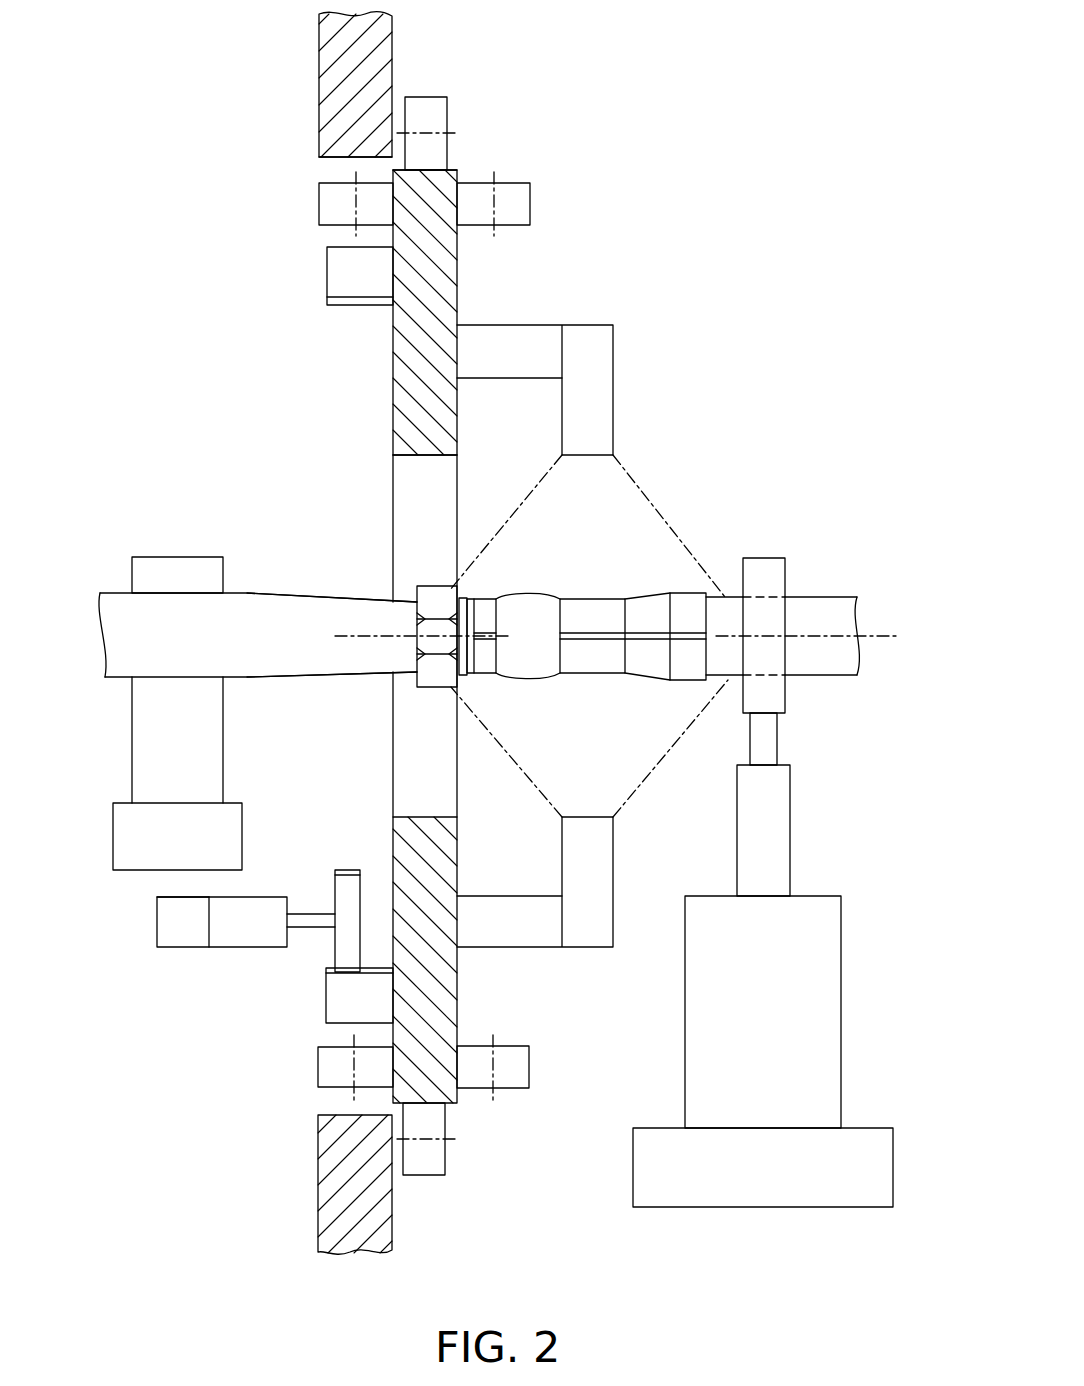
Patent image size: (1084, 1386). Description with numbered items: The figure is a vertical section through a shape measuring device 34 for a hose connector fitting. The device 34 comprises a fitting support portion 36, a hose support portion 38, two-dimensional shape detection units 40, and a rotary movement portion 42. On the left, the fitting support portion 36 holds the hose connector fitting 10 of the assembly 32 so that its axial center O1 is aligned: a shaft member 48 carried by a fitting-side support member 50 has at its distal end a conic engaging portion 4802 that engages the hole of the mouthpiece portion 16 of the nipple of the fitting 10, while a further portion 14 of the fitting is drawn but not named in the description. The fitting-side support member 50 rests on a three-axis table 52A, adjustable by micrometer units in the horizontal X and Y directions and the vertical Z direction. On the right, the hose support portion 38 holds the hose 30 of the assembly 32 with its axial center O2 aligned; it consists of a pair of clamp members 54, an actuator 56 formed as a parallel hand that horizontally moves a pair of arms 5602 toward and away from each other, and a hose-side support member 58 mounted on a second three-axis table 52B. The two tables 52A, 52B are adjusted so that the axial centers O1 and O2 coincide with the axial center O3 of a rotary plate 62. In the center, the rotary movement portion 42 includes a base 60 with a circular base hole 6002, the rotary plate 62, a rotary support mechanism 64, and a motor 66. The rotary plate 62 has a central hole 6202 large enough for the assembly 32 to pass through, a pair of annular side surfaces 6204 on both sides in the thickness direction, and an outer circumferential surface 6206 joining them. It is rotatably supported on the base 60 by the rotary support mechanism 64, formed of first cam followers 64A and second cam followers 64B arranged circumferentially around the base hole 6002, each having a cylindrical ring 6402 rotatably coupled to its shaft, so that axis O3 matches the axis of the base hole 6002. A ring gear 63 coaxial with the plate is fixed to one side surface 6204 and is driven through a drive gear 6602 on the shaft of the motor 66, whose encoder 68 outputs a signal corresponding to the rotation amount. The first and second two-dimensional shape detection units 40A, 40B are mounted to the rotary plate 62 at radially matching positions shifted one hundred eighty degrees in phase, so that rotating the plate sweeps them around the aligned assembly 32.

The hose connector fitting 10 is at (557, 578).
The workpiece body portion 14 is at (598, 597).
The mouthpiece portion 16 is at (465, 597).
The hose 30 is at (738, 597).
The assembly 32 is at (652, 482).
The shape measuring device 34 is at (728, 69).
The fitting support portion 36 is at (232, 517).
The hose support portion 38 is at (812, 523).
The two-dimensional shape detection units 40 is at (593, 642).
The first two-dimensional shape detection unit 40A is at (613, 353).
The second two-dimensional shape detection unit 40B is at (613, 903).
The rotary movement portion 42 is at (193, 1035).
The shaft member 48 is at (253, 593).
The engaging portion 4802 is at (350, 600).
The fitting-side support member 50 is at (160, 557).
The 3-axis table 52A is at (235, 803).
The 3-axis table 52B is at (711, 1207).
The clamp members 54 is at (762, 558).
The actuator 56 is at (793, 814).
The arms 5602 is at (777, 733).
The hose-side support member 58 is at (686, 1043).
The base 60 is at (318, 63).
The base hole 6002 is at (338, 157).
The rotary plate 62 is at (392, 380).
The hole 6202 is at (418, 455).
The annular side surfaces 6204 is at (393, 348).
The outer circumferential surface 6206 is at (457, 170).
The ring gear 63 is at (326, 1003).
The rotary support mechanism 64 is at (533, 123).
The first cam followers 64A is at (427, 97).
The second cam followers 64B is at (318, 208).
The cylindrical ring 6402 is at (412, 633).
The motor 66 is at (227, 948).
The drive gear 6602 is at (348, 870).
The encoder 68 is at (172, 949).
The axial center O1 is at (512, 637).
The axial center O2 is at (878, 630).
The axial center O3 is at (367, 637).